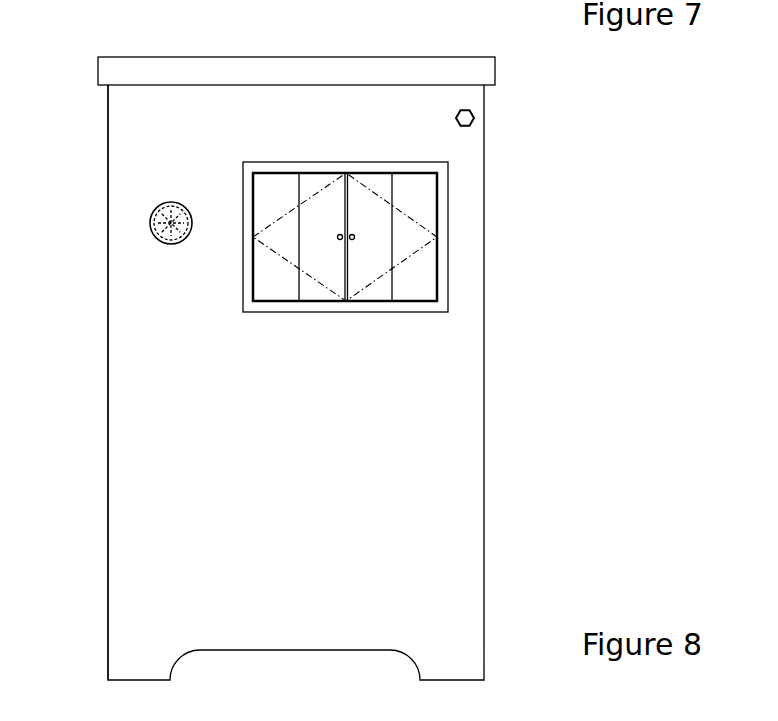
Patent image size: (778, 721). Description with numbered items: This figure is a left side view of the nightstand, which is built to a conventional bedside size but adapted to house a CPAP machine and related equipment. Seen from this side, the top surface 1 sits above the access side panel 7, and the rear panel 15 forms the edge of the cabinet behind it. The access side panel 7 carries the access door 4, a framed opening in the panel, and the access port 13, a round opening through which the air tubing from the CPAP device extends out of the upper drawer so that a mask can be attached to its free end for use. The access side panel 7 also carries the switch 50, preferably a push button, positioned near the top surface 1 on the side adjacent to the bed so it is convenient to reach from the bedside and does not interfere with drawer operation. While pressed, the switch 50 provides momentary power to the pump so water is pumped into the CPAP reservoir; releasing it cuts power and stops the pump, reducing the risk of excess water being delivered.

The top surface 1 is at (413, 57).
The access door 4 is at (313, 292).
The access side panel 7 is at (216, 566).
The access port 13 is at (171, 207).
The rear panel 15 is at (103, 322).
The switch 50 is at (475, 117).